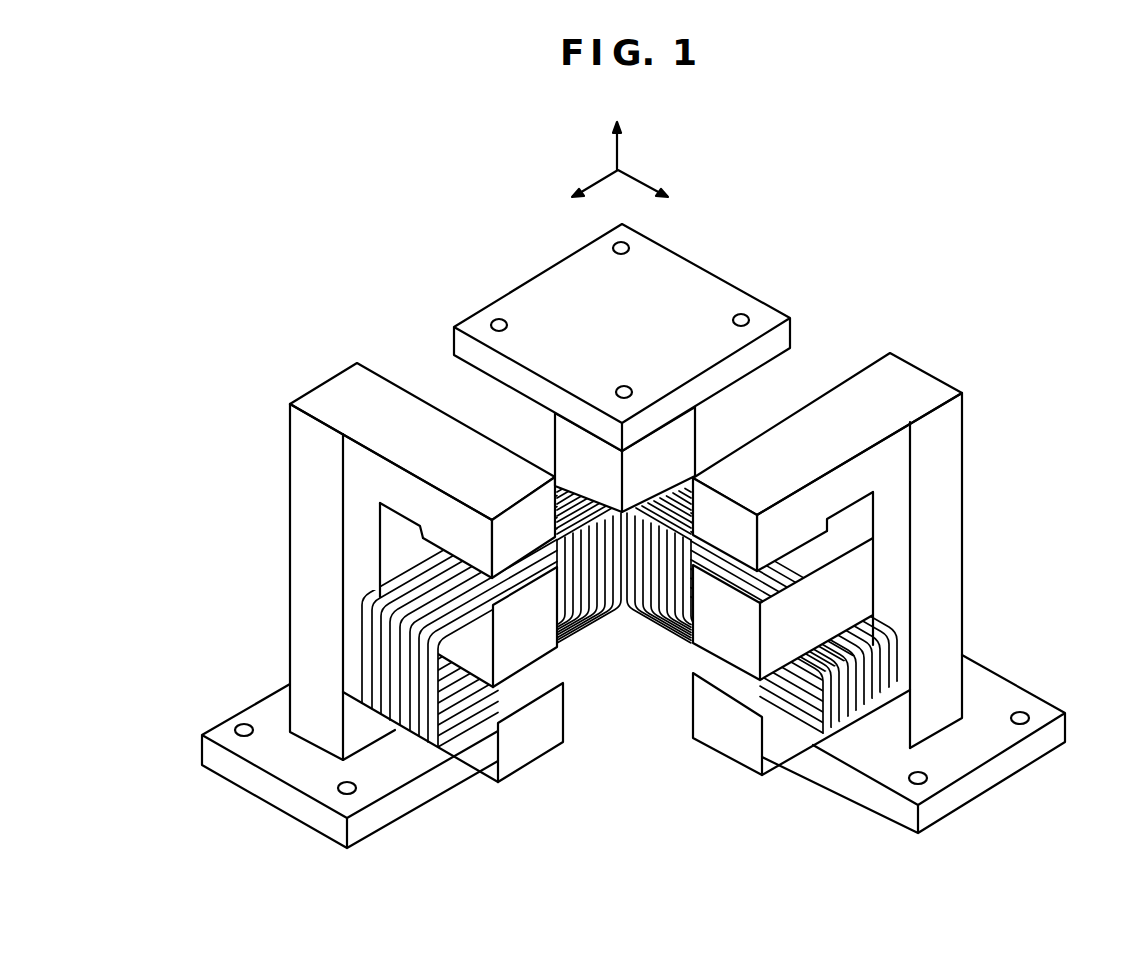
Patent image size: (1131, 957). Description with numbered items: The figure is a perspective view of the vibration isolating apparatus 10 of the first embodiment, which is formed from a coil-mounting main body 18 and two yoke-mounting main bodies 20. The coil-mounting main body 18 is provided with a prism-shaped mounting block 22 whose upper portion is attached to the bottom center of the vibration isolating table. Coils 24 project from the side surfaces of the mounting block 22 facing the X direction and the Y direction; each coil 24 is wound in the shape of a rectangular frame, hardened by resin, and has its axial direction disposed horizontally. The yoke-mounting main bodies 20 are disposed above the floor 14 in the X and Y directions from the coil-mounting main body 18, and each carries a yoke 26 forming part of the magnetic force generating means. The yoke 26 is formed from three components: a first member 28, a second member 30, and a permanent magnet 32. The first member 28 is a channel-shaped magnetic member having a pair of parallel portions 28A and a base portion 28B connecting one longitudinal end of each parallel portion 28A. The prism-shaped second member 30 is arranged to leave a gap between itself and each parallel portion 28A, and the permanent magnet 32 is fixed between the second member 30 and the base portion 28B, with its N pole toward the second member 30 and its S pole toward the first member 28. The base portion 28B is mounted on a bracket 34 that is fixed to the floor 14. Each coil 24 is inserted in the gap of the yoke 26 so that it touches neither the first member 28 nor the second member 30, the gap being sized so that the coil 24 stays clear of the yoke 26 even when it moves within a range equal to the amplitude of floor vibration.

The vibration isolating apparatus 10 is at (887, 253).
The floor 14 is at (1065, 802).
The coil-mounting main body 18 is at (740, 263).
The yoke-mounting main body 20 is at (519, 774).
The mounting block 22 is at (578, 442).
The coil 24 is at (590, 658).
The yoke 26 is at (426, 436).
The first member 28 is at (352, 470).
The parallel portion 28A is at (413, 493).
The base portion 28B is at (352, 530).
The second member 30 is at (513, 645).
The permanent magnet 32 is at (388, 556).
The bracket 34 is at (312, 617).